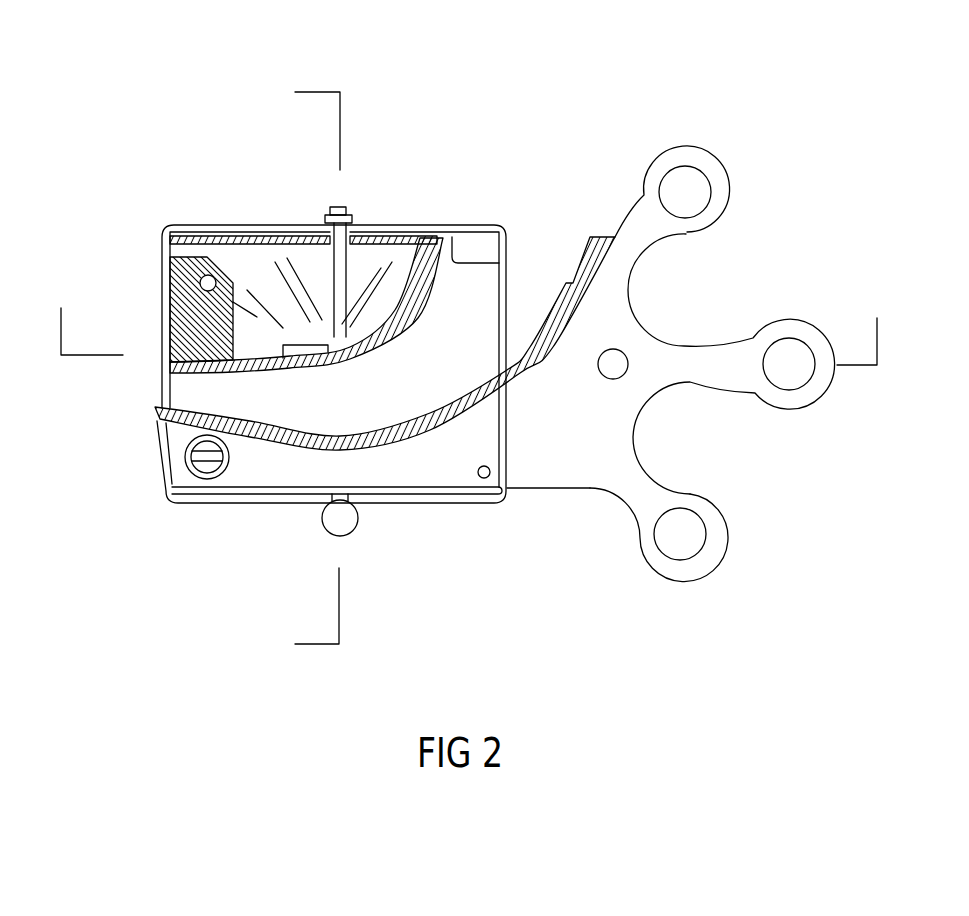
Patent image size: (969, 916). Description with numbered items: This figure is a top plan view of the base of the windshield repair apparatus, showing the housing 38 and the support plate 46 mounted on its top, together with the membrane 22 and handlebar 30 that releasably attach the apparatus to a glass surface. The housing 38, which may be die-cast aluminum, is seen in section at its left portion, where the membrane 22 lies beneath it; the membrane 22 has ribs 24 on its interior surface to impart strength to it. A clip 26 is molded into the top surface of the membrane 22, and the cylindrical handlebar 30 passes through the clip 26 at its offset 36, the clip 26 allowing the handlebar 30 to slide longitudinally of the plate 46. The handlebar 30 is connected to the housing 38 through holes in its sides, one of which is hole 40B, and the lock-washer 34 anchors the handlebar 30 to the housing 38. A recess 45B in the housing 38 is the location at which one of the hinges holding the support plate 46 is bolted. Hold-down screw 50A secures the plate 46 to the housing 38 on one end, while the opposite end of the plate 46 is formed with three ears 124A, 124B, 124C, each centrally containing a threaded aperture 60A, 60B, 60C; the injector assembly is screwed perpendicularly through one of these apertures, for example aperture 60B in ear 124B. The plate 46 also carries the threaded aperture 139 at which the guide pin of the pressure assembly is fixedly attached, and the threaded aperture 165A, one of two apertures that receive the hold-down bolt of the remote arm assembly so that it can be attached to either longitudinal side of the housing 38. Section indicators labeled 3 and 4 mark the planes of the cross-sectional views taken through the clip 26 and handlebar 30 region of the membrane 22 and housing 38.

The membrane 22 is at (206, 276).
The ribs 24 is at (279, 258).
The clip 26 is at (247, 290).
The handlebar 30 is at (338, 212).
The lock-washer 34 is at (354, 216).
The offset 36 is at (274, 262).
The housing 38 is at (401, 237).
The hole 40B is at (358, 233).
The recess 45B is at (473, 245).
The support plate 46 is at (158, 437).
The hold-down screw 50A is at (203, 477).
The threaded aperture 60A is at (703, 521).
The threaded aperture 60B is at (791, 339).
The threaded aperture 60C is at (699, 169).
The ear 124A is at (660, 576).
The ear 124B is at (785, 319).
The ear 124C is at (688, 146).
The threaded aperture 139 is at (624, 352).
The threaded aperture 165A is at (482, 479).
The section line 3- 3 is at (465, 322).
The section line 4- 4 is at (307, 371).